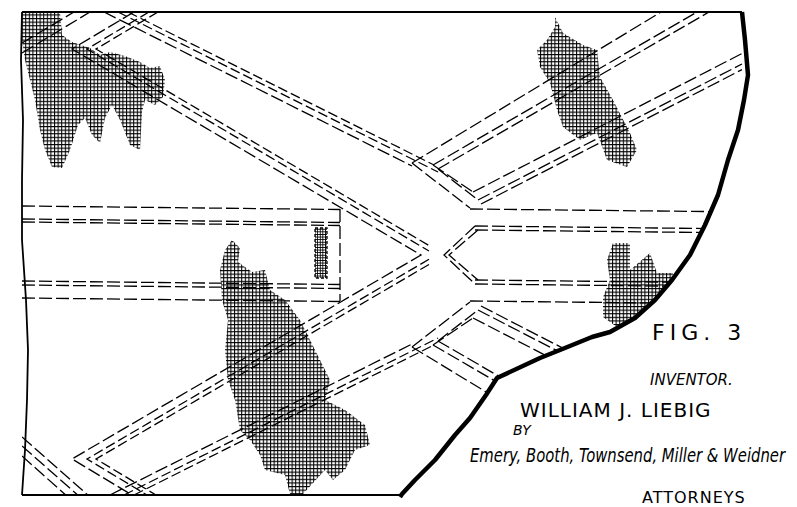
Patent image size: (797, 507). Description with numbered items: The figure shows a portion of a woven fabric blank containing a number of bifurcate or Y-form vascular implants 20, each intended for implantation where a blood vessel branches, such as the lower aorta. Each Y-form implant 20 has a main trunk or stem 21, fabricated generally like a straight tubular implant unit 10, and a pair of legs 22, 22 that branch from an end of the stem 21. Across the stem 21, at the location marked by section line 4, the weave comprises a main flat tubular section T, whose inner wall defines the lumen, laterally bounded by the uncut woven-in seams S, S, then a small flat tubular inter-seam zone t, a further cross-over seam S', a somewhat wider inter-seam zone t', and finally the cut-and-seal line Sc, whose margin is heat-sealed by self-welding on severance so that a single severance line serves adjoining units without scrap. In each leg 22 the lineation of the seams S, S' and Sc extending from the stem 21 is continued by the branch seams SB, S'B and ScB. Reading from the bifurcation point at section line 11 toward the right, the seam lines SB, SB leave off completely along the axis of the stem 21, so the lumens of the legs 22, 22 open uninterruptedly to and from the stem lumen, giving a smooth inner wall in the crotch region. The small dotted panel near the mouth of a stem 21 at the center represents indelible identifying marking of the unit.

The section line 4- 4 is at (80, 181).
The tubular implant unit 10 is at (417, 220).
The section line 11- 11 is at (470, 256).
The bifurcate or Y-form implant 20 is at (320, 108).
The main trunk or stem 21 is at (160, 207).
The leg 22 is at (182, 112).
The main tubular section T is at (190, 73).
The small tubular inter-seam zone t is at (278, 146).
The intermediate-width tubular inter-seam zone t' is at (258, 153).
The seam S is at (338, 361).
The seam S' is at (347, 337).
The cut-and-seal seam Sc is at (347, 372).
The branch seam SB is at (256, 142).
The branch seam S'B is at (258, 253).
The branch cut-and-seal seam ScB is at (277, 172).